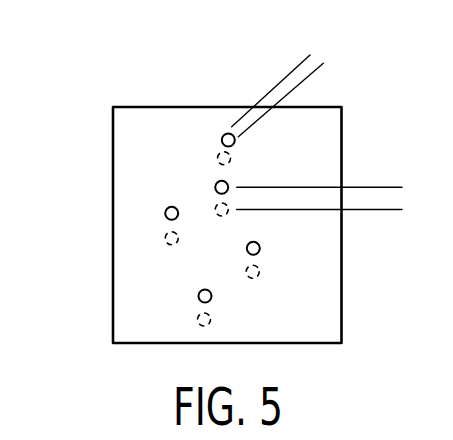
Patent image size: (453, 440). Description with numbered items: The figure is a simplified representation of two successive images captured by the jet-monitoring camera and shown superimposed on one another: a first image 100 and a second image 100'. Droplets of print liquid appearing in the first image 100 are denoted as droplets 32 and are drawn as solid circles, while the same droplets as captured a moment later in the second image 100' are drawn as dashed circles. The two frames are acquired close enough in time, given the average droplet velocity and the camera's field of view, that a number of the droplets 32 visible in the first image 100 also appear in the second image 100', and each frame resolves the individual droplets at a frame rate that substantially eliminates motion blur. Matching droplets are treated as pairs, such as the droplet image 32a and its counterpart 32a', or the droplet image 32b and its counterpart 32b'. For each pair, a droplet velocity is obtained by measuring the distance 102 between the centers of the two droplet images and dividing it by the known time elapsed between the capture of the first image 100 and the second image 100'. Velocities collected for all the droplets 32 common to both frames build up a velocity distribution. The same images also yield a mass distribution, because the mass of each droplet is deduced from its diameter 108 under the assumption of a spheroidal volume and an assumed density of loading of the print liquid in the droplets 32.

The first image 100 is at (188, 197).
The second image 100' is at (227, 225).
The droplets 32 is at (222, 138).
The droplet image 32a is at (110, 200).
The droplet image in second image 32a' is at (110, 252).
The droplet image 32b is at (286, 239).
The droplet image in second image 32b' is at (278, 301).
The diameter 108 is at (343, 100).
The distance 102 is at (394, 247).